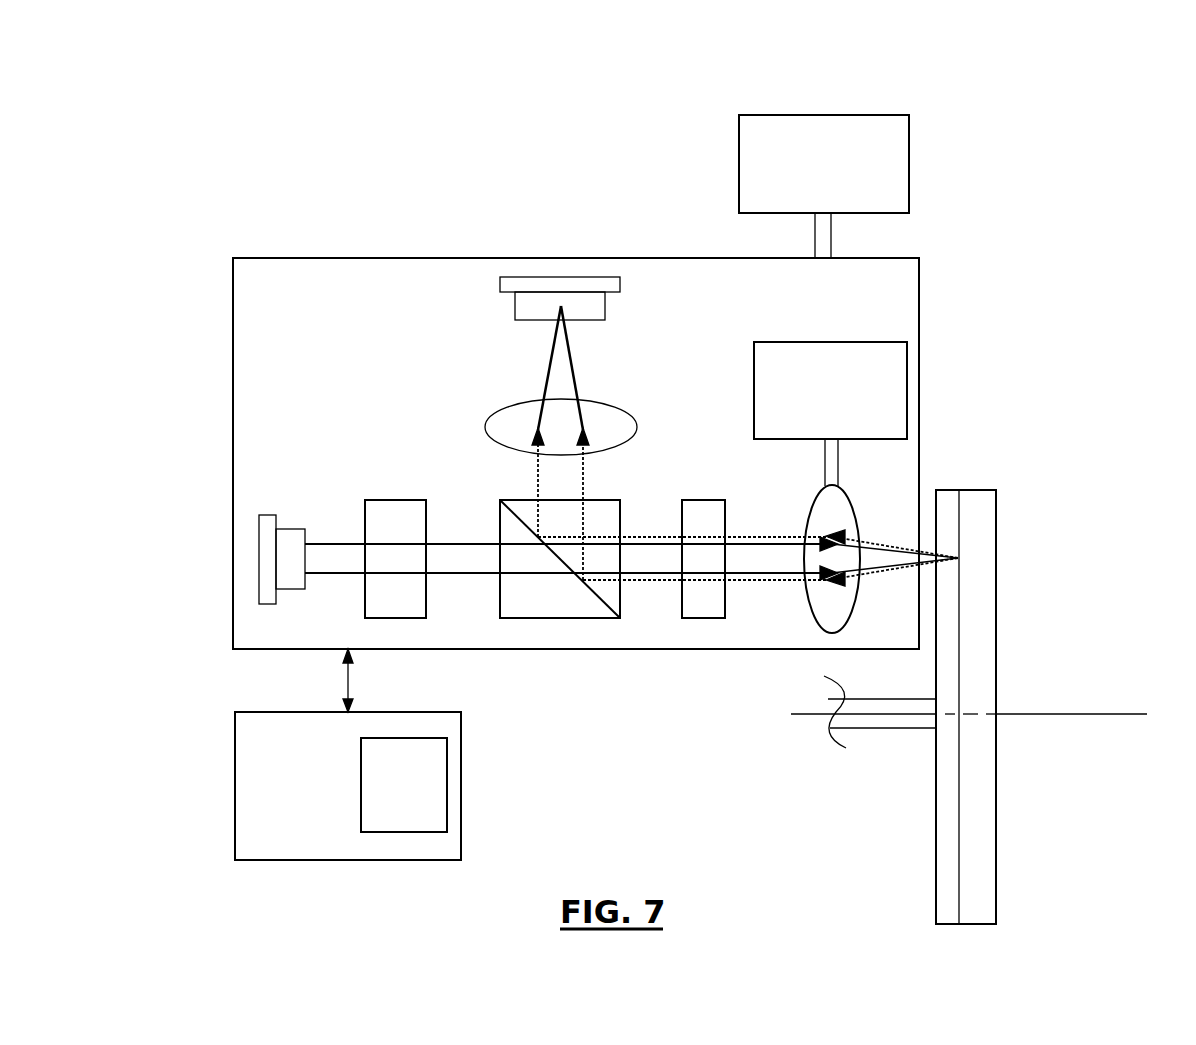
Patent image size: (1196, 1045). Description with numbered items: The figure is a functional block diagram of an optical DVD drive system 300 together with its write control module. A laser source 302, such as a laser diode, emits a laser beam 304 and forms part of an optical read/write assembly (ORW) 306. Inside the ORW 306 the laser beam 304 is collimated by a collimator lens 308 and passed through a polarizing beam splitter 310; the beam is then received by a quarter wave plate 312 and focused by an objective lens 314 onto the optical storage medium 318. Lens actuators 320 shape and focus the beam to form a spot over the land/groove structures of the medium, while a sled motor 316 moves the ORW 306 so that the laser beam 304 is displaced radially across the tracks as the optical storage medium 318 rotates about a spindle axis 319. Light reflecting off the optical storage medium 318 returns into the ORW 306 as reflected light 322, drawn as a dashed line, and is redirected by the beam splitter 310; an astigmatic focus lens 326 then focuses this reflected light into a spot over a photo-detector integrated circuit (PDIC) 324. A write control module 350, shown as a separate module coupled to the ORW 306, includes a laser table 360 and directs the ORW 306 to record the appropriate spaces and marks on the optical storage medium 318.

The optical DVD drive system 300 is at (944, 230).
The laser source 302 is at (263, 513).
The laser beam 304 is at (328, 542).
The optical read/write assembly (ORW) 306 is at (307, 258).
The collimator lens 308 is at (390, 500).
The polarizing beam splitter 310 is at (603, 500).
The quarter wave plate 312 is at (680, 500).
The objective lens 314 is at (845, 508).
The sled motor 316 is at (778, 115).
The optical storage medium 318 is at (959, 490).
The spindle axis 319 is at (1098, 712).
The lens actuators 320 is at (777, 342).
The reflected light 322 is at (737, 537).
The photo-detector integrated circuit (PDIC) 324 is at (620, 293).
The astigmatic focus lens 326 is at (608, 400).
The write control module 350 is at (235, 757).
The laser table 360 is at (447, 785).